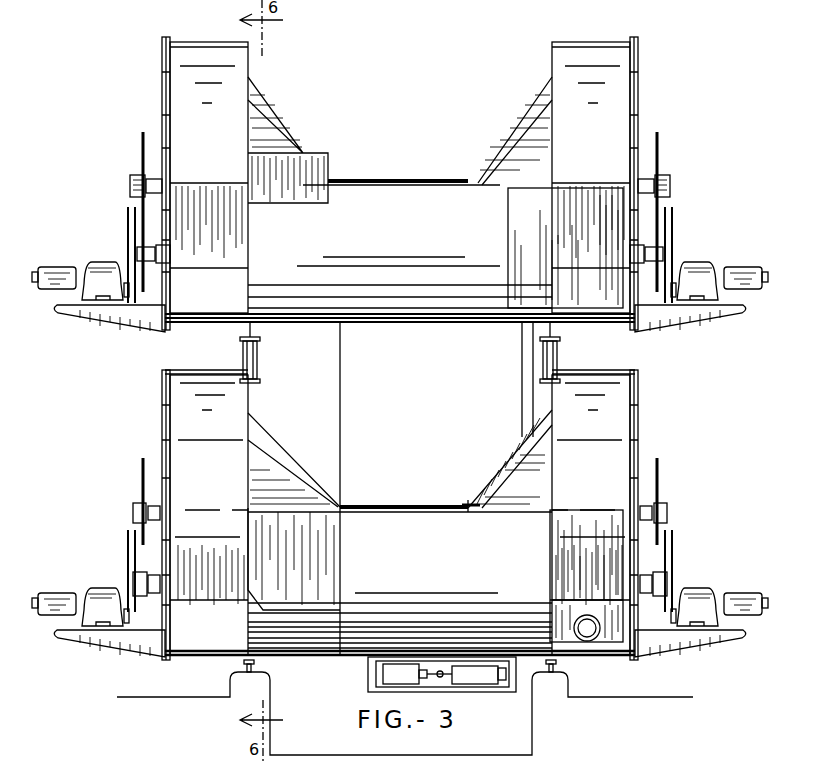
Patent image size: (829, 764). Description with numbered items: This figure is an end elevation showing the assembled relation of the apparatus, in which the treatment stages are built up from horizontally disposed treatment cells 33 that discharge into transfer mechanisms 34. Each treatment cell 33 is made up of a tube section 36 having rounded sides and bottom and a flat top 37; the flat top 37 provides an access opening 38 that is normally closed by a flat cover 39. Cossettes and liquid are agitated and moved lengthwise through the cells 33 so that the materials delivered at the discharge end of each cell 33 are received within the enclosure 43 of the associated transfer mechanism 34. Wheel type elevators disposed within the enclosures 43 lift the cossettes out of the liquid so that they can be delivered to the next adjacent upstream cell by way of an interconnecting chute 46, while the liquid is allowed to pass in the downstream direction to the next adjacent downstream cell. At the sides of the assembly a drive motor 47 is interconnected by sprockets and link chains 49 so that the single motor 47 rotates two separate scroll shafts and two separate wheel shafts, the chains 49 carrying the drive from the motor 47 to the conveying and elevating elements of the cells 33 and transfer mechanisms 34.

The treatment cell 33 is at (433, 251).
The transfer mechanism 34 is at (220, 145).
The tube section 36 is at (433, 574).
The flat top 37 is at (503, 508).
The access opening 38 is at (420, 506).
The flat cover 39 is at (454, 180).
The enclosure 43 is at (176, 97).
The interconnecting chute 46 is at (275, 131).
The drive motor 47 is at (62, 272).
The link chain 49 is at (143, 530).